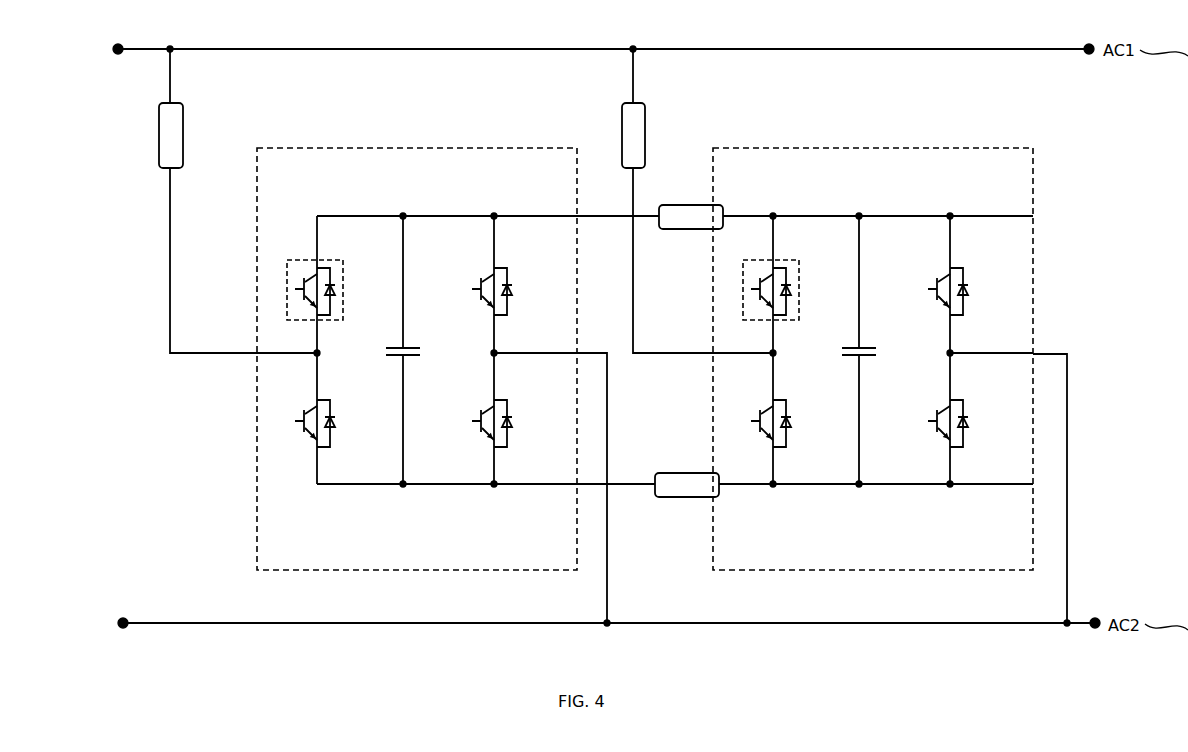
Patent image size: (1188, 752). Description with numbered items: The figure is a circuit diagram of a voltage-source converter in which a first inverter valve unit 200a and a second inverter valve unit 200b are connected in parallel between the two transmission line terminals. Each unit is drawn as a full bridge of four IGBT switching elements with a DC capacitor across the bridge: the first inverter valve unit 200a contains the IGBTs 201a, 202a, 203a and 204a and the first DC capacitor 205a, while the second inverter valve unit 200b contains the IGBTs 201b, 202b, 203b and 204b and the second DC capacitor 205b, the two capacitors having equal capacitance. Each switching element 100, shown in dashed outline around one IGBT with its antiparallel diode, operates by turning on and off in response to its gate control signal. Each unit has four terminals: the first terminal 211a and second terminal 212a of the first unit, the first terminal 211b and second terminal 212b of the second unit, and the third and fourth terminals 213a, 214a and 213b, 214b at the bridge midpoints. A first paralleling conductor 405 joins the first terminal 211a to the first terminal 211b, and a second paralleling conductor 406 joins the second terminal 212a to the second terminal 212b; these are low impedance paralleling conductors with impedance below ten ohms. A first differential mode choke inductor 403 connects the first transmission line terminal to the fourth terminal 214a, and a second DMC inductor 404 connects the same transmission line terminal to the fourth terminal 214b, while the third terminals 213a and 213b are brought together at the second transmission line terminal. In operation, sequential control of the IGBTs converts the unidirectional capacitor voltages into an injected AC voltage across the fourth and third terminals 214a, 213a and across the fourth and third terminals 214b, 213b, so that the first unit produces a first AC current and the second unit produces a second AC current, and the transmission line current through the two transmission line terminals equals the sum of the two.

The switching element 100 is at (288, 262).
The first inverter valve unit 200a is at (408, 148).
The second inverter valve unit 200b is at (873, 335).
The IGBT switching element 201a is at (260, 296).
The IGBT switching element 201b is at (710, 284).
The IGBT switching element 202a is at (262, 424).
The IGBT switching element 202b is at (711, 418).
The IGBT switching element 203a is at (461, 272).
The IGBT switching element 203b is at (948, 284).
The IGBT switching element 204a is at (462, 408).
The IGBT switching element 204b is at (948, 418).
The DC capacitor 205a is at (398, 368).
The DC capacitor 205b is at (846, 350).
The first terminal 211a is at (403, 216).
The first terminal 211b is at (901, 203).
The second terminal 212a is at (400, 488).
The second terminal 212b is at (901, 513).
The third terminal 213a is at (497, 350).
The third terminal 213b is at (972, 330).
The fourth terminal 214a is at (320, 348).
The fourth terminal 214b is at (810, 334).
The first DMC inductor 403 is at (160, 120).
The DMC inductor 404 is at (622, 118).
The first paralleling conductor 405 is at (717, 205).
The second paralleling conductor 406 is at (688, 498).